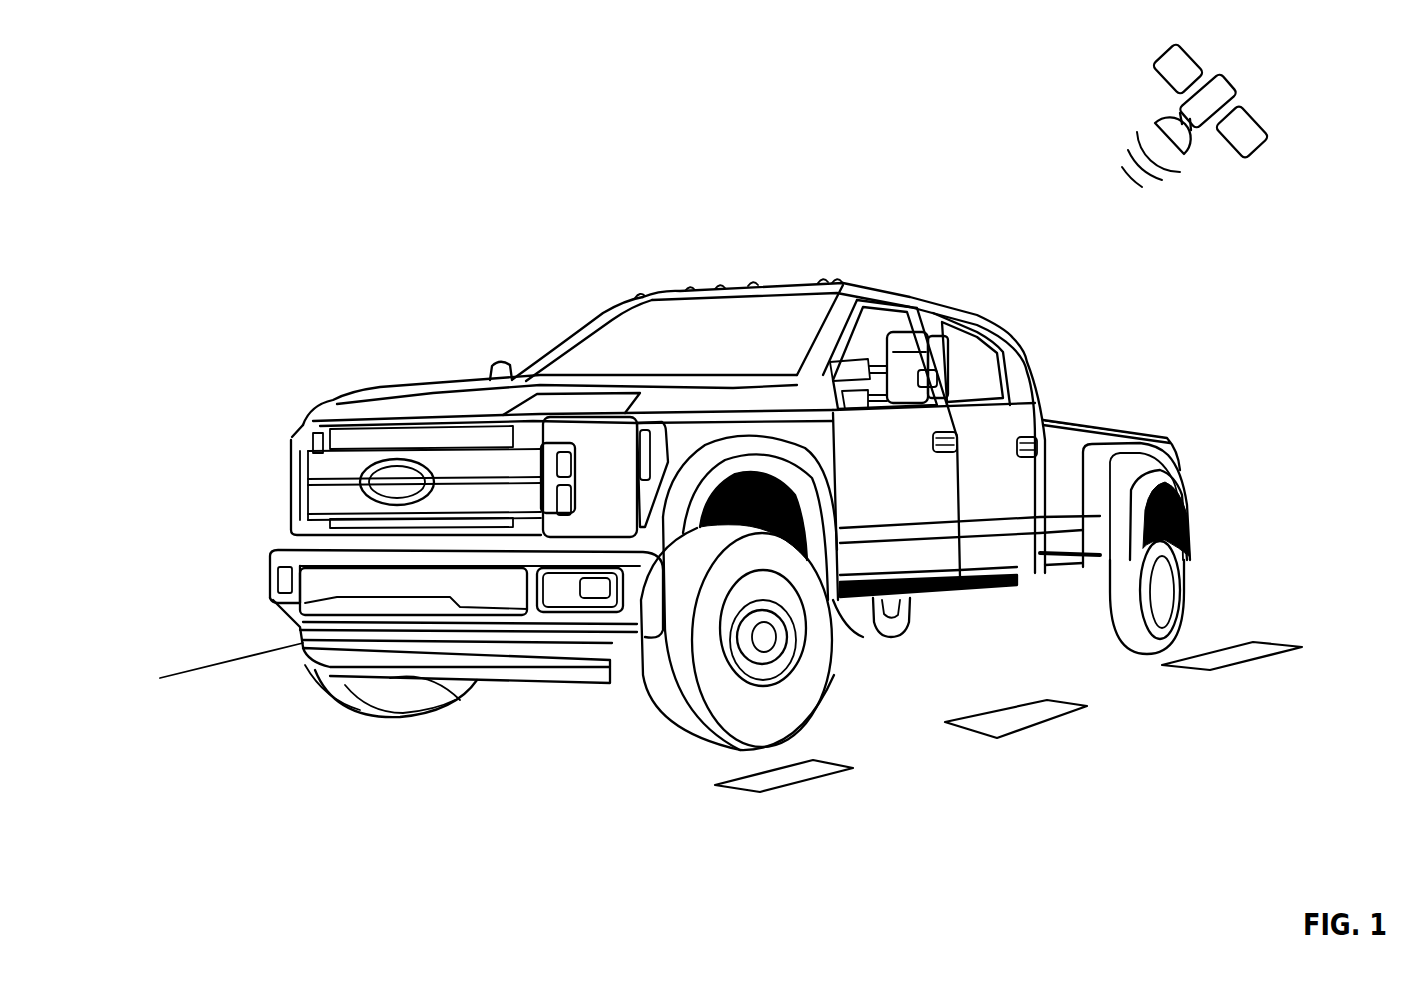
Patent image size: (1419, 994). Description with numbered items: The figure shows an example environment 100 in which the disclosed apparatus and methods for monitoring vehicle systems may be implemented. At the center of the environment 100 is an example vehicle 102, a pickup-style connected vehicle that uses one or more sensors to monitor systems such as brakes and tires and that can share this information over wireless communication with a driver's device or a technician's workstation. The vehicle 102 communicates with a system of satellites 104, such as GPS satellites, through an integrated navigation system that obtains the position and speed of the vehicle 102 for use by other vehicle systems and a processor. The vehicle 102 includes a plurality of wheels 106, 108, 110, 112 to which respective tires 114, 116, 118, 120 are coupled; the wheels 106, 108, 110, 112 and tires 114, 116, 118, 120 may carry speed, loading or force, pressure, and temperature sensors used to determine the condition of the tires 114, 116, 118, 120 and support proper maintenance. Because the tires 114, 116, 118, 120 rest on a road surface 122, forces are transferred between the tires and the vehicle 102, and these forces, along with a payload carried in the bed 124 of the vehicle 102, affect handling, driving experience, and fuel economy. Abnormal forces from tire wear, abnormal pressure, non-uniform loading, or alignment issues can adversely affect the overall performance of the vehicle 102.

The environment 100 is at (343, 110).
The vehicle 102 is at (348, 393).
The satellites 104 is at (1163, 52).
The wheel 106 is at (775, 690).
The wheel 108 is at (420, 688).
The wheel 110 is at (1170, 598).
The wheel 112 is at (905, 618).
The tire 114 is at (685, 738).
The tire 116 is at (370, 710).
The tire 118 is at (1120, 640).
The tire 120 is at (862, 645).
The road surface 122 is at (1043, 727).
The bed 124 is at (1093, 420).